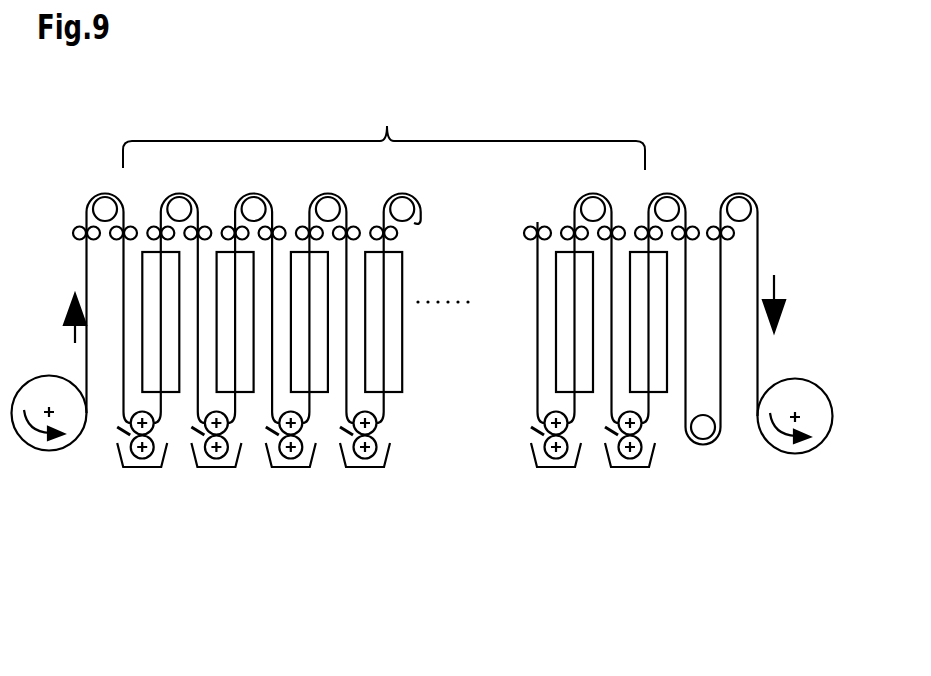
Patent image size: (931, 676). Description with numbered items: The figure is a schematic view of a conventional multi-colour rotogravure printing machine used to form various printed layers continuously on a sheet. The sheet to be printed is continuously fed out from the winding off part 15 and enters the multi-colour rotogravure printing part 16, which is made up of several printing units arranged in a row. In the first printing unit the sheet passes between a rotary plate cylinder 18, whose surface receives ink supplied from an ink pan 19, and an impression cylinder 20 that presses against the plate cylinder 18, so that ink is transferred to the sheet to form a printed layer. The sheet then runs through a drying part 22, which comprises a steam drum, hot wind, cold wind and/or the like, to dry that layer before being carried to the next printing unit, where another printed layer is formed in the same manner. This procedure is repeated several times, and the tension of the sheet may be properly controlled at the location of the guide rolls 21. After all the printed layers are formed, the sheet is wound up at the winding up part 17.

The winding off part 15 is at (49, 392).
The multi-colour rotogravure printing part 16 is at (415, 277).
The winding up part 17 is at (795, 385).
The rotary plate cylinder 18 is at (372, 465).
The ink pan 19 is at (347, 470).
The impression cylinder 20 is at (375, 418).
The guide rolls 21 is at (697, 231).
The drying part 22 is at (393, 310).